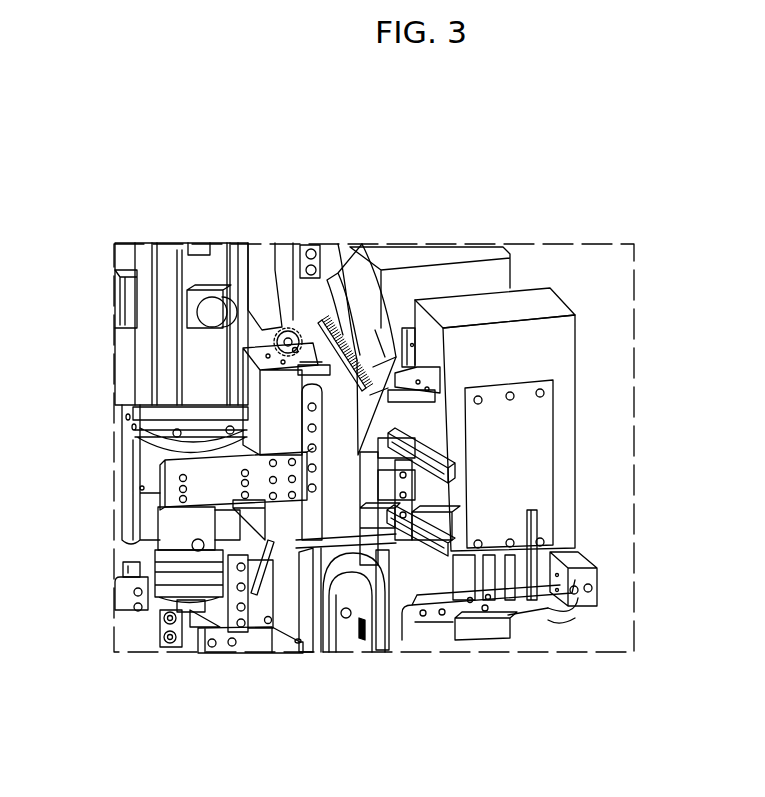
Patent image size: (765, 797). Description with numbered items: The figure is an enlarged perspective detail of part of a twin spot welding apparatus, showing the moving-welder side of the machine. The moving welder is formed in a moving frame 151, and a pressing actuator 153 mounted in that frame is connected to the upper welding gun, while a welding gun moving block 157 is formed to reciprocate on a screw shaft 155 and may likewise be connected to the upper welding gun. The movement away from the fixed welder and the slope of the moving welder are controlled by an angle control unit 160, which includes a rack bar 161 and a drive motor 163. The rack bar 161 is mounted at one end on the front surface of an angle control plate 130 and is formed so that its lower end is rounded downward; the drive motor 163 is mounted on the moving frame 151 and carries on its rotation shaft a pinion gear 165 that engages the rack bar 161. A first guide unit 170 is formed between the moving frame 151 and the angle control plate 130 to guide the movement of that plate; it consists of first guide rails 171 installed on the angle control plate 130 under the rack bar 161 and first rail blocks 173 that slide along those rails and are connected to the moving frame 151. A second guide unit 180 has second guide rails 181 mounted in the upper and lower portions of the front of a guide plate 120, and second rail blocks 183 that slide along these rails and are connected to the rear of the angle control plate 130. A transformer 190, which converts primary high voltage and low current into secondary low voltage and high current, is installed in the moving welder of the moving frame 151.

The guide plate 120 is at (463, 513).
The angle control plate 130 is at (345, 340).
The moving frame 151 is at (275, 402).
The pressing actuator 153 is at (143, 312).
The screw shaft 155 is at (160, 533).
The welding gun moving block 157 is at (125, 566).
The angle control unit 160 is at (331, 295).
The rack bar 161 is at (366, 320).
The drive motor 163 is at (280, 265).
The pinion gear 165 is at (275, 333).
The first guide unit 170 is at (317, 731).
The first guide rails 171 is at (330, 633).
The first rail blocks 173 is at (267, 623).
The second guide unit 180 is at (445, 728).
The second guide rails 181 is at (435, 612).
The second rail blocks 183 is at (392, 610).
The transformer 190 is at (546, 351).